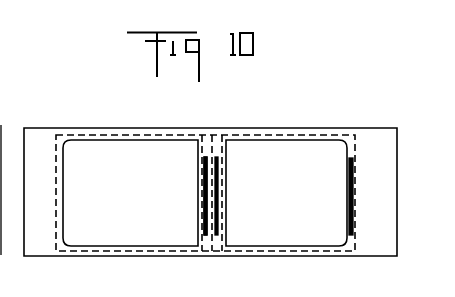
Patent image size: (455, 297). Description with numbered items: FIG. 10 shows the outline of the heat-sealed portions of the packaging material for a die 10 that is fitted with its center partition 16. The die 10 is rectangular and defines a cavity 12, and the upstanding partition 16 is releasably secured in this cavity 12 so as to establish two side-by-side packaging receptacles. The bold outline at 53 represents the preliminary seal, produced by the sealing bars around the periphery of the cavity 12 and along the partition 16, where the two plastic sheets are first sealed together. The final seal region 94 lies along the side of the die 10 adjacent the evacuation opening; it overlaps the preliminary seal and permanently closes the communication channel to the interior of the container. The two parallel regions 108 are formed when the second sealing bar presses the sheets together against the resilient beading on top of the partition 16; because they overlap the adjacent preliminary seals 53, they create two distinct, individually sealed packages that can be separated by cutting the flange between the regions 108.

The die 10 is at (43, 124).
The preliminary seal areas 53 is at (115, 253).
The die cavity 12 is at (302, 187).
The partition 16 is at (201, 174).
The parallel sealed regions 108 is at (204, 192).
The final seal region 94 is at (353, 200).